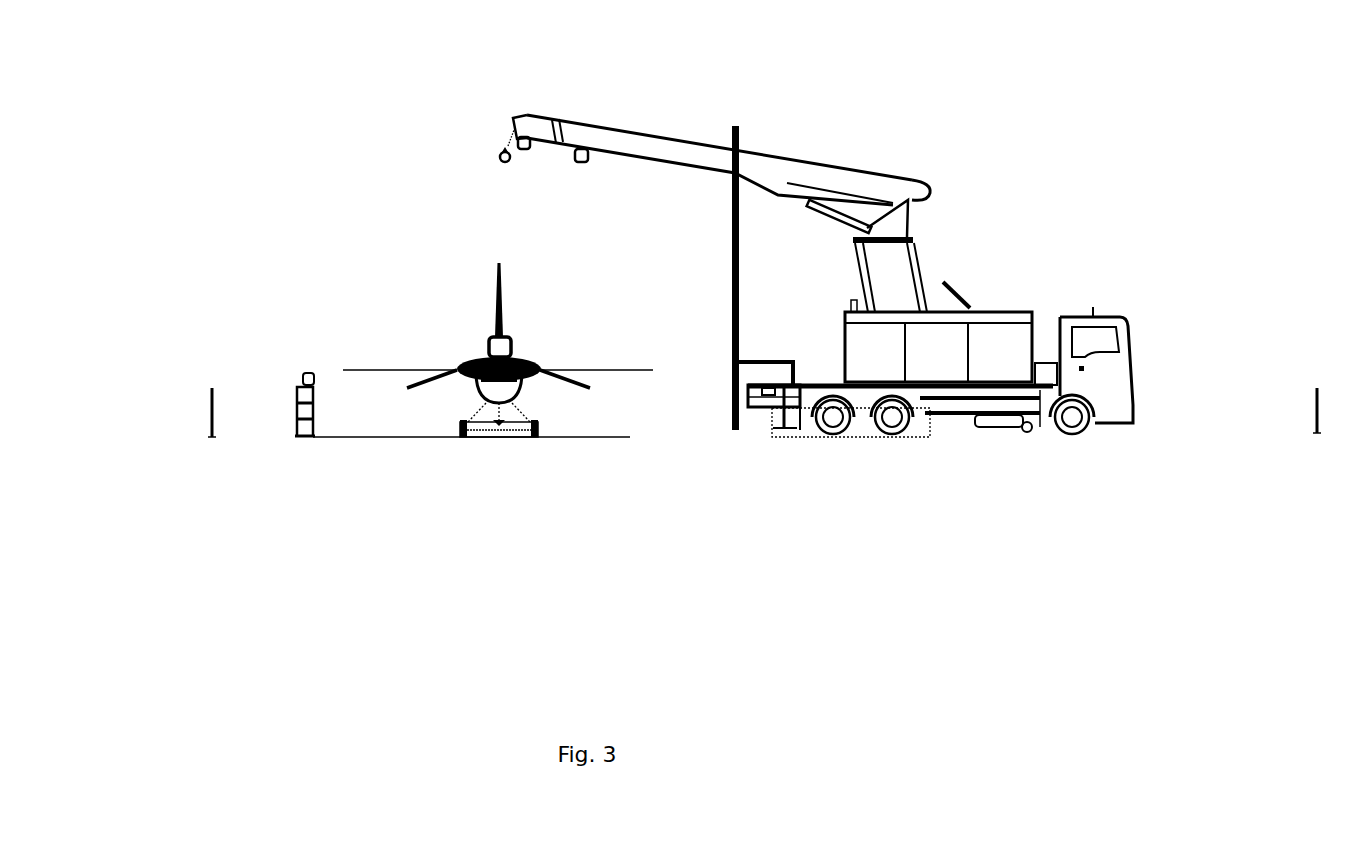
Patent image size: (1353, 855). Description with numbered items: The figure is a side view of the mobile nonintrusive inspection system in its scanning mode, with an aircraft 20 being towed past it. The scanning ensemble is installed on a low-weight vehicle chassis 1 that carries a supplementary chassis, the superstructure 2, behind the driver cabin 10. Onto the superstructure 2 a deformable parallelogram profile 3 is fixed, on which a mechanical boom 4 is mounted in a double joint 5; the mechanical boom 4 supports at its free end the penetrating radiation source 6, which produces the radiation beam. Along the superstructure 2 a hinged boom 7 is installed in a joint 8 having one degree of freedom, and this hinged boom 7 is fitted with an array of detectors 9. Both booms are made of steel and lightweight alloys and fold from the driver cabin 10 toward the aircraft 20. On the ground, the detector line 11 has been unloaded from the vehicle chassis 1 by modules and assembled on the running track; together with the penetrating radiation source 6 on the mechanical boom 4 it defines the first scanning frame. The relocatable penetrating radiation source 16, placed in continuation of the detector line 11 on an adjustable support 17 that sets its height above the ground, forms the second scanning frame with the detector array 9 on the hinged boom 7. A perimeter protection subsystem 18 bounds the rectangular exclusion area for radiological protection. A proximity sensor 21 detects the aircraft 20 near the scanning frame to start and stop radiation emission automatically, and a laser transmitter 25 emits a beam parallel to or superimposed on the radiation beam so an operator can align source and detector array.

The vehicle chassis 1 is at (762, 410).
The superstructure 2 is at (947, 410).
The deformable parallelogram profile 3 is at (964, 290).
The mechanical boom 4 is at (815, 176).
The double joint 5 is at (919, 241).
The penetrating radiation source 6 is at (497, 150).
The hinged boom 7 is at (741, 127).
The joint 8 is at (775, 376).
The array of detectors 9 is at (729, 281).
The driver cabin 10 is at (1119, 311).
The detector line 11 is at (575, 440).
The relocatable penetrating radiation source 16 is at (296, 386).
The adjustable support 17 is at (295, 411).
The perimeter protection subsystem 18 is at (208, 400).
The aircraft 20 is at (522, 322).
The proximity sensor 21 is at (585, 147).
The laser transmitter 25 is at (523, 133).